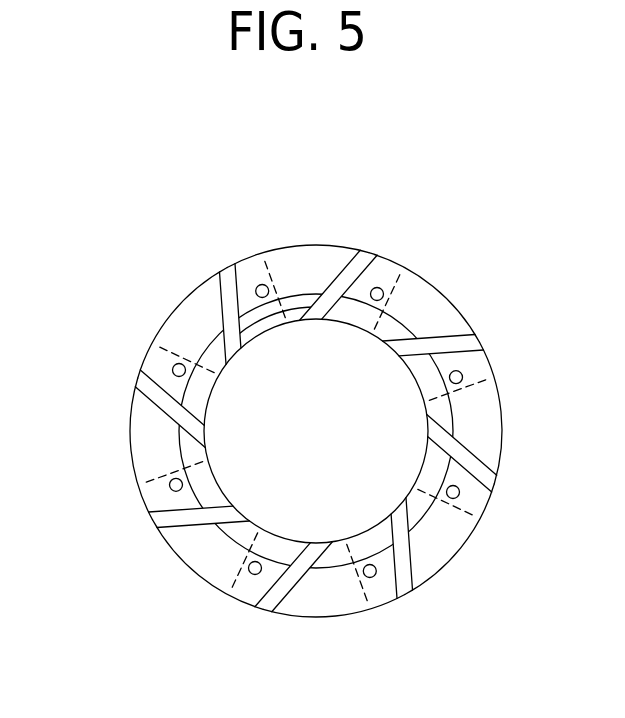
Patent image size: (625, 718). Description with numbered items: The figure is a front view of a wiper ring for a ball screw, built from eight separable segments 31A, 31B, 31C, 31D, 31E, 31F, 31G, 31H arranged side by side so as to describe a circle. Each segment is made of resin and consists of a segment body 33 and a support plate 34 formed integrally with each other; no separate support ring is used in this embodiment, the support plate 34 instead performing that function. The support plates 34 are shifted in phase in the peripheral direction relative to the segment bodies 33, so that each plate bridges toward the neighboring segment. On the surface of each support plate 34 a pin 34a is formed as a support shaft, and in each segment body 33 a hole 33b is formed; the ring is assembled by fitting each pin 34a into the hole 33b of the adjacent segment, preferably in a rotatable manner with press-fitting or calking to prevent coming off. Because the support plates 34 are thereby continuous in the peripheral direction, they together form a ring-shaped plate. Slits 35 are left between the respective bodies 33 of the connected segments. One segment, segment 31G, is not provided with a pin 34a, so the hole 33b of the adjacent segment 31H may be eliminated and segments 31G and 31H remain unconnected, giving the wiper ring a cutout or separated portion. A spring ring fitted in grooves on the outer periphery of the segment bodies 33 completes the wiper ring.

The segment 31A is at (326, 247).
The segment 31B is at (470, 320).
The segment 31C is at (501, 414).
The segment 31D is at (462, 548).
The segment 31E is at (342, 618).
The segment 31F is at (200, 585).
The segment 31G is at (131, 465).
The segment 31H is at (164, 324).
The segment body 33 is at (350, 247).
The hole 33b is at (243, 262).
The support plate 34 is at (384, 289).
The pin 34a is at (263, 284).
The slit 35 is at (222, 275).